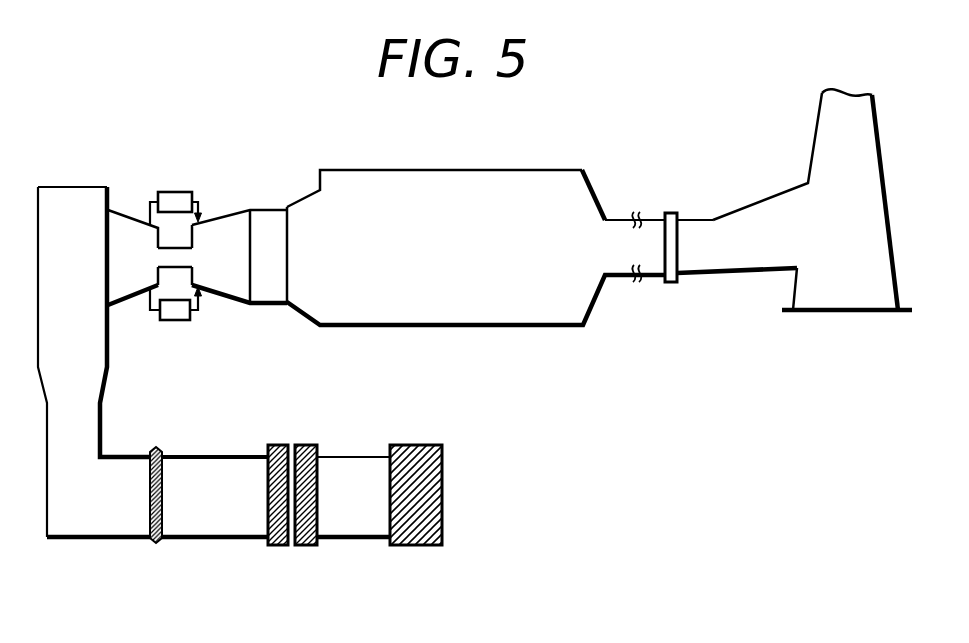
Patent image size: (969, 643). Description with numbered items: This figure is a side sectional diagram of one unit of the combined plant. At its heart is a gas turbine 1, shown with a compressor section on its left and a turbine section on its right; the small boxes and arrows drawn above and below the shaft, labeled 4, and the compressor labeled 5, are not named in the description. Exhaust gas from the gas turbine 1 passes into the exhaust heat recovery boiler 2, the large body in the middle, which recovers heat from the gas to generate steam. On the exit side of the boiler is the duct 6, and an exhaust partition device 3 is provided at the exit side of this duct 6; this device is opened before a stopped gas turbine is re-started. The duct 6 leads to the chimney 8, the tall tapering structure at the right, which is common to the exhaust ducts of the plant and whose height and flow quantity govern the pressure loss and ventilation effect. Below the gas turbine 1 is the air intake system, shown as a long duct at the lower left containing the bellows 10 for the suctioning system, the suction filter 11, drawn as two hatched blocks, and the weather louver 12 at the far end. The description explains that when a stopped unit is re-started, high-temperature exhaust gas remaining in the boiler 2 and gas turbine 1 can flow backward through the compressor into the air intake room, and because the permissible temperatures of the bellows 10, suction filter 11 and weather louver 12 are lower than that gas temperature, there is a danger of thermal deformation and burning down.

The gas turbine 1 is at (233, 210).
The exhaust heat recovery boiler 2 is at (468, 170).
The exhaust partition device 3 is at (670, 212).
The fuel supply system 4 is at (178, 192).
The compressor 5 is at (122, 208).
The duct 6 is at (622, 276).
The chimney 8 is at (817, 115).
The bellows 10 is at (155, 543).
The suction filter 11 is at (303, 547).
The weather louver 12 is at (442, 460).